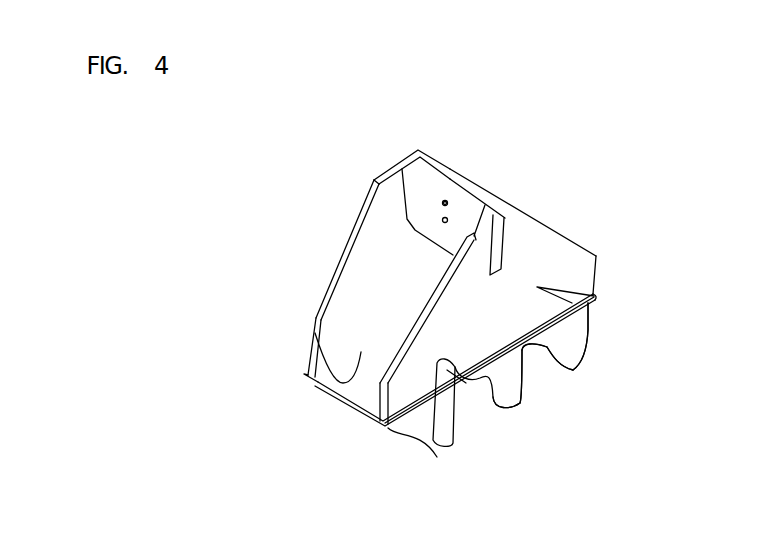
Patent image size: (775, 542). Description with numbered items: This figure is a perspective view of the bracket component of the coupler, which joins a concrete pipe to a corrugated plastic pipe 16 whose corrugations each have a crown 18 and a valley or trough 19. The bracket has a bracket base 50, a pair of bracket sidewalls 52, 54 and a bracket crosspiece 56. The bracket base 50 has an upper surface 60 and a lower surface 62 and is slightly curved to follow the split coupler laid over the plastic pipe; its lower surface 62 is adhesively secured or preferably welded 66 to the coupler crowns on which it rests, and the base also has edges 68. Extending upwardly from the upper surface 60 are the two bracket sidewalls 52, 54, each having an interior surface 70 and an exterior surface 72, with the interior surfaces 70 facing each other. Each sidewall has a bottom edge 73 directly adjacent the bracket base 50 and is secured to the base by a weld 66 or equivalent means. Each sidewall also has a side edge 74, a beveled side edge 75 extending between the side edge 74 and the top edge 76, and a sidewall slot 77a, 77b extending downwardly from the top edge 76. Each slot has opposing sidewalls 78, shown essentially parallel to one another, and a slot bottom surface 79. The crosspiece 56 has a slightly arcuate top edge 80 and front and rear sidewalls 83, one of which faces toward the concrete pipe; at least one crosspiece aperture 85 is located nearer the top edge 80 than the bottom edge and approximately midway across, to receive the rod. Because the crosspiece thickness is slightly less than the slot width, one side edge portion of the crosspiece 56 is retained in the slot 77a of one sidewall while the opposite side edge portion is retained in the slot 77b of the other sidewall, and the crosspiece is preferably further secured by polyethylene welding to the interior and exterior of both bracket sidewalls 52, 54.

The plastic pipe 16 is at (527, 388).
The crown 18 is at (600, 318).
The valley or trough 19 is at (513, 410).
The bracket base 50 is at (370, 392).
The bracket sidewall 52 is at (483, 303).
The bracket sidewall 54 is at (337, 254).
The bracket crosspiece 56 is at (497, 200).
The upper surface 60 is at (352, 383).
The lower surface 62 is at (337, 398).
The weld 66 is at (309, 331).
The edges 68 is at (490, 388).
The interior surface 70 is at (362, 248).
The exterior surface 72 is at (362, 175).
The bottom edge 73 is at (377, 342).
The side edge 74 is at (377, 410).
The beveled side edge 75 is at (360, 207).
The top edge 76 is at (420, 152).
The sidewall slot 77a is at (393, 167).
The sidewall slot 77b is at (541, 216).
The opposing sidewalls 78 is at (500, 257).
The slot bottom surface 79 is at (490, 272).
The top edge 80 is at (428, 154).
The front and rear sidewalls 83 is at (430, 196).
The crosspiece aperture 85 is at (455, 217).